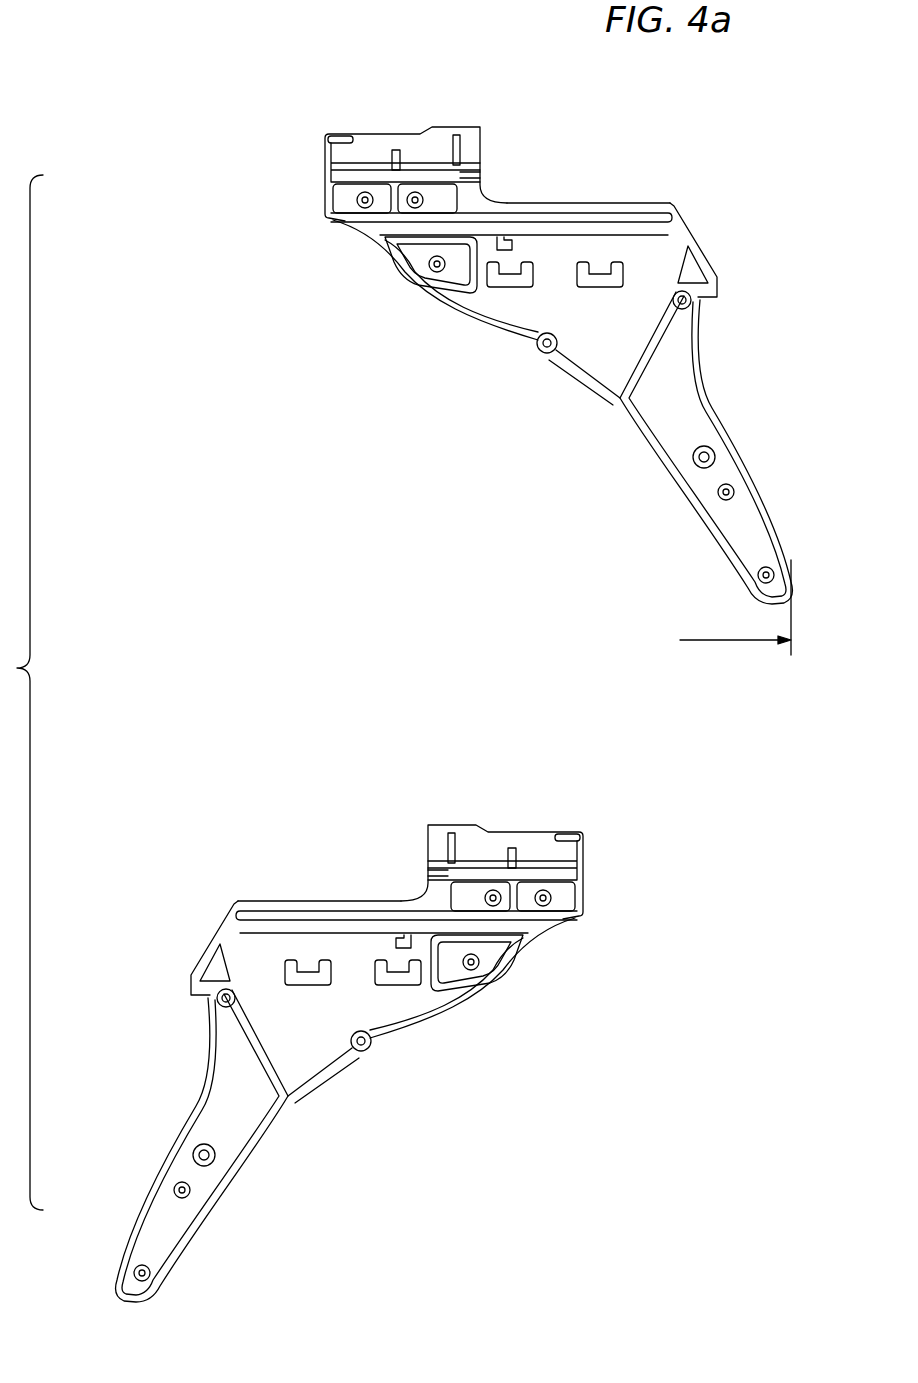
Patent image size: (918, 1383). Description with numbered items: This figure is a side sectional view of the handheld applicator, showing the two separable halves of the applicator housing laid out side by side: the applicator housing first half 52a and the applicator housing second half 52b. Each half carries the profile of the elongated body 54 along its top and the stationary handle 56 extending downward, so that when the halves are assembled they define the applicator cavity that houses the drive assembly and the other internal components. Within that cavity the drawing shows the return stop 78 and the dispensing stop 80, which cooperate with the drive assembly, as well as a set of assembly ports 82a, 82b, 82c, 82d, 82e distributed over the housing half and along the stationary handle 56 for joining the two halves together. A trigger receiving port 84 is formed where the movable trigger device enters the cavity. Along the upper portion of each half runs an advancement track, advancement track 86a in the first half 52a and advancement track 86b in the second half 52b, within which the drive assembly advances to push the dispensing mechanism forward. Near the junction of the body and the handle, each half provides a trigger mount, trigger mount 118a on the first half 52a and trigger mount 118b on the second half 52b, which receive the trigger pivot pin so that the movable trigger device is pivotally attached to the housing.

The applicator housing first half 52a is at (202, 225).
The applicator housing second half 52b is at (626, 1027).
The elongated body 54 is at (500, 156).
The stationary handle 56 is at (666, 497).
The return stop 78 is at (490, 286).
The dispensing stop 80 is at (624, 270).
The assembly port 82a is at (365, 200).
The assembly port 82b is at (418, 200).
The assembly port 82c is at (437, 265).
The assembly port 82d is at (690, 306).
The assembly port 82e is at (770, 575).
The trigger receiving port 84 is at (556, 370).
The advancement track 86a is at (628, 228).
The advancement track 86b is at (286, 926).
The trigger mount 118a is at (538, 344).
The trigger mount 118b is at (370, 1046).